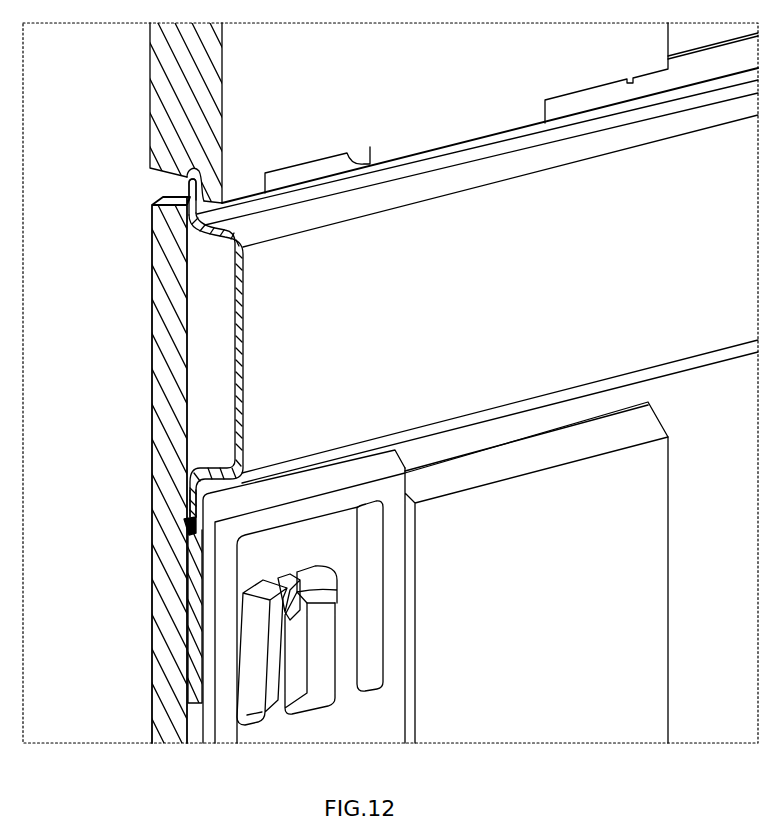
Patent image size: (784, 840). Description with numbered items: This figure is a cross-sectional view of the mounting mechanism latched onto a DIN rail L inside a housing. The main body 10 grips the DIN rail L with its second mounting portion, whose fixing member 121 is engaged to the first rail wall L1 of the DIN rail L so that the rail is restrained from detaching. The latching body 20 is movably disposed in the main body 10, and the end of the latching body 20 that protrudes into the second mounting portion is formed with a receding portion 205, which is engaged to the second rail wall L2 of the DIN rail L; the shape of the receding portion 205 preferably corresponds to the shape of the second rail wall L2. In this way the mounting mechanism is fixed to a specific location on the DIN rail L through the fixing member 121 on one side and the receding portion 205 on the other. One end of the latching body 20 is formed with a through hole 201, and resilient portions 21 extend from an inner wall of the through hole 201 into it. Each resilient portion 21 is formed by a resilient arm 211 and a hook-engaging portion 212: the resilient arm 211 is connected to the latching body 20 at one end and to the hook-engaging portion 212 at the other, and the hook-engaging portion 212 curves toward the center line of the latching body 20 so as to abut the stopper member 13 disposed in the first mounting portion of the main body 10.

The main body 10 is at (160, 645).
The fixing member 121 is at (200, 188).
The DIN rail L is at (166, 348).
The first rail wall L1 is at (190, 192).
The second rail wall L2 is at (190, 517).
The receding portion 205 is at (185, 533).
The latching body 20 is at (435, 572).
The through hole 201 is at (388, 538).
The resilient portion 21 is at (385, 569).
The resilient arm 211 is at (343, 640).
The hook-engaging portion 212 is at (342, 585).
The stopper member 13 is at (312, 573).